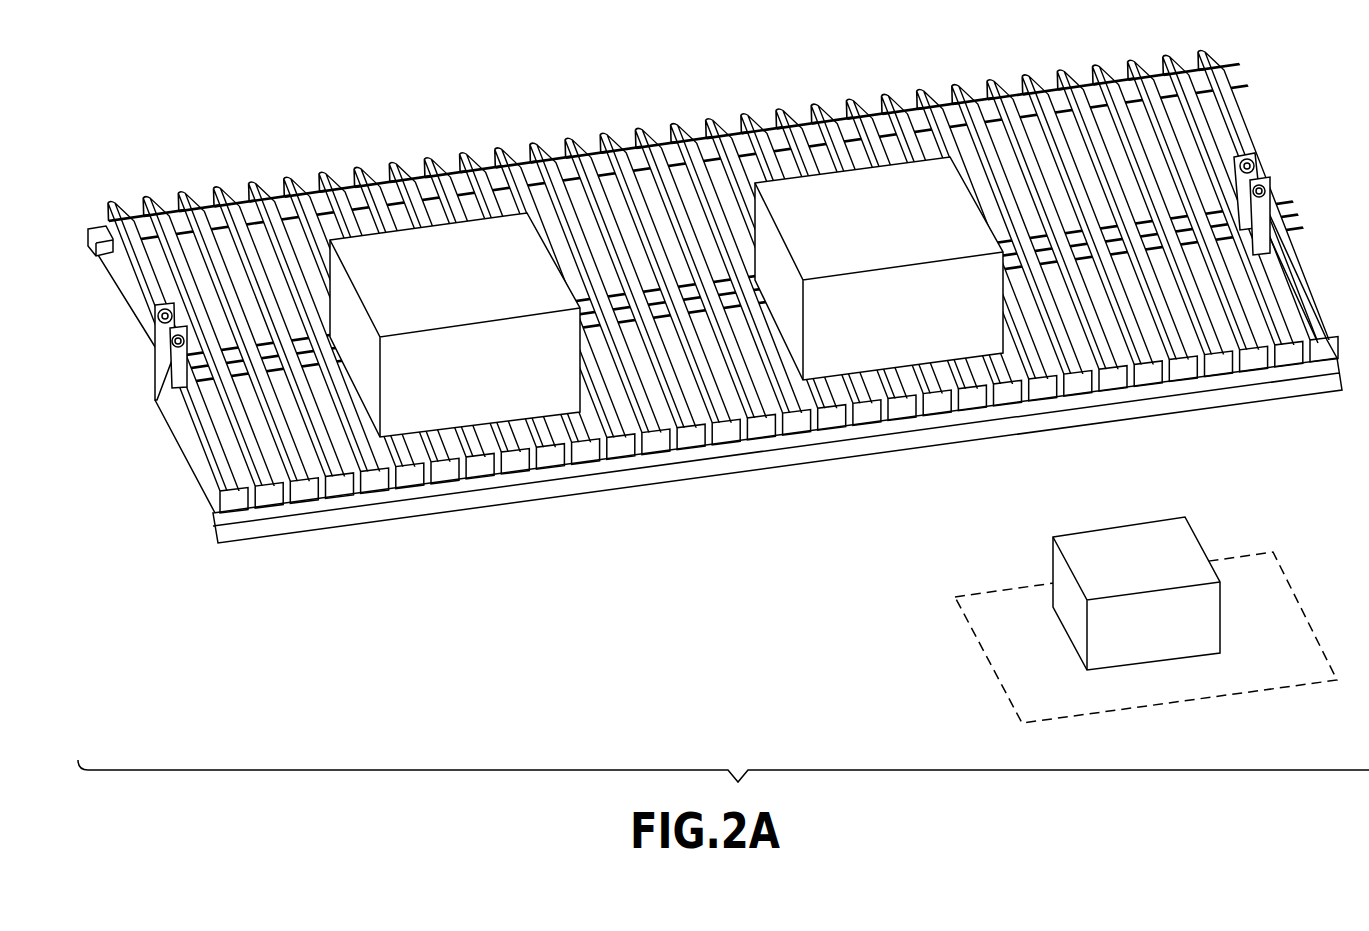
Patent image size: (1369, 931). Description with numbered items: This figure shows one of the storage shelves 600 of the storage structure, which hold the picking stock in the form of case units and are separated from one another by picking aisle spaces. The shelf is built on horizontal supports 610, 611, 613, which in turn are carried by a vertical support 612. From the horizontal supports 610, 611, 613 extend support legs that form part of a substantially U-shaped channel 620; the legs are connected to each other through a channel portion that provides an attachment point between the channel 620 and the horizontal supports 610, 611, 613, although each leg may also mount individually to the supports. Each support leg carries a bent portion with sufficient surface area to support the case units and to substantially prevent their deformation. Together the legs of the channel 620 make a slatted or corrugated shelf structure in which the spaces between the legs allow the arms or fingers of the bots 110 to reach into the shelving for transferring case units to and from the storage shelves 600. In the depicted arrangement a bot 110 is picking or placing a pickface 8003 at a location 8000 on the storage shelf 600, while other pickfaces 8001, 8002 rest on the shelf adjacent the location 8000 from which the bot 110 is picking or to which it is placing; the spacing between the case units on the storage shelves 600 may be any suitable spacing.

The storage shelves 600 is at (695, 353).
The horizontal support 610 is at (478, 511).
The horizontal support 611 is at (92, 234).
The vertical support 612 is at (156, 352).
The horizontal support 613 is at (1270, 265).
The channel 620 is at (478, 163).
The location 8000 is at (695, 353).
The pickface 8001 is at (392, 250).
The pickface 8002 is at (813, 190).
The pickface 8003 is at (1135, 538).
The bot 110 is at (1005, 677).